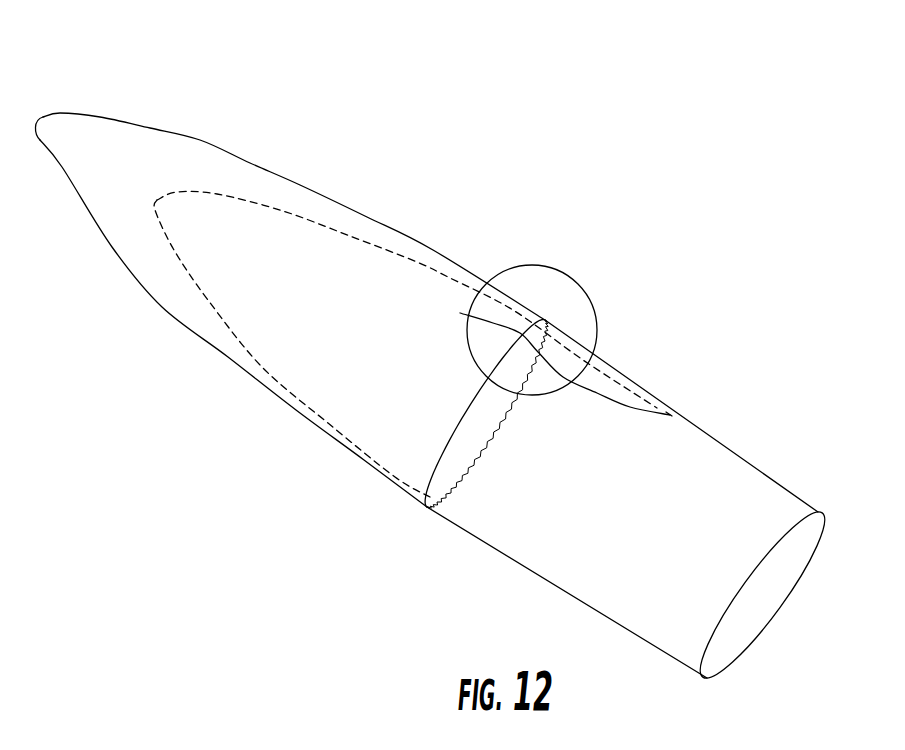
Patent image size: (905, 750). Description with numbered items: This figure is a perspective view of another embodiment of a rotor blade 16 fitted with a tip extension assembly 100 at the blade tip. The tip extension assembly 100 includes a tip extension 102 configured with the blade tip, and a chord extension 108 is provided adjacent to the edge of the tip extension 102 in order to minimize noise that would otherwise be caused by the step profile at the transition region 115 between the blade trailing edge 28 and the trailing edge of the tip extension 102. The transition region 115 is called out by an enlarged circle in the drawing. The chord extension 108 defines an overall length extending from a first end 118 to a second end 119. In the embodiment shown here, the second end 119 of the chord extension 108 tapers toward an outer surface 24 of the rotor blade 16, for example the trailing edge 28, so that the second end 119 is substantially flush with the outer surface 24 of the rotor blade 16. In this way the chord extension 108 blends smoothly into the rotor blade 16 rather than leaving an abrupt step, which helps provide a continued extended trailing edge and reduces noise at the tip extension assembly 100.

The tip extension assembly 100 is at (448, 362).
The tip extension 102 is at (375, 310).
The chord extension 108 is at (554, 351).
The transition region 115 is at (520, 262).
The first end 118 is at (460, 313).
The second end 119 is at (672, 415).
The rotor blade 16 is at (642, 505).
The outer surface 24 is at (523, 527).
The trailing edge 28 is at (738, 457).